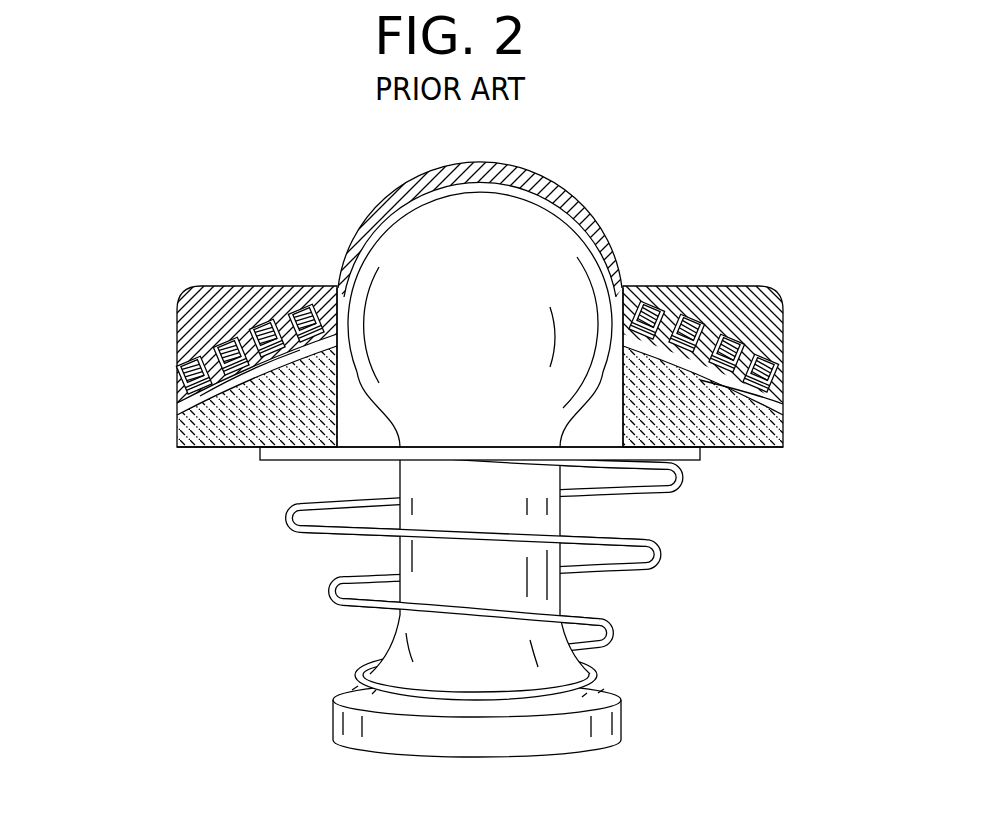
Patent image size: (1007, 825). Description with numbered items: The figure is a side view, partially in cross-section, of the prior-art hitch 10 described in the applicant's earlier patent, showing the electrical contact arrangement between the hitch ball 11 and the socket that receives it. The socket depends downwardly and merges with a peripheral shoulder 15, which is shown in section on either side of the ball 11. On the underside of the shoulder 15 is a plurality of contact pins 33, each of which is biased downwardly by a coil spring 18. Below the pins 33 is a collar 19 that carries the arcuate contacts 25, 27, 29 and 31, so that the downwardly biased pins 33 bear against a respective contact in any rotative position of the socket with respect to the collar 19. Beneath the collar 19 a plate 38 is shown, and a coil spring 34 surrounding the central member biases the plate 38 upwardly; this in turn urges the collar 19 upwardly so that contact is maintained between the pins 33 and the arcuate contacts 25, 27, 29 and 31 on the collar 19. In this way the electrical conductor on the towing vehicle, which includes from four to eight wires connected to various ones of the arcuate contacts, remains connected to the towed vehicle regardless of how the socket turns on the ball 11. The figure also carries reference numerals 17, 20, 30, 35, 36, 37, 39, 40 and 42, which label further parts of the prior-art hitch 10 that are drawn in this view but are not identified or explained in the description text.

The hitch invention 10 is at (271, 586).
The ball 11 is at (530, 220).
The peripheral shoulder 15 is at (197, 296).
The stem 17 is at (540, 598).
The coil springs 18 is at (695, 350).
The collar 19 is at (182, 440).
The raceway 20 is at (177, 414).
The arcuate contact 25 is at (196, 398).
The arcuate contact 27 is at (240, 385).
The arcuate contact 29 is at (715, 345).
The outer race 30 is at (762, 405).
The arcuate contact 31 is at (636, 325).
The contact pins 33 is at (198, 391).
The coil spring 34 is at (660, 556).
The roller 35 is at (262, 338).
The base 36 is at (600, 682).
The roller 37 is at (293, 322).
The plate 38 is at (270, 458).
The roller 39 is at (326, 312).
The inner race 40 is at (712, 368).
The housing lower portion 42 is at (692, 372).